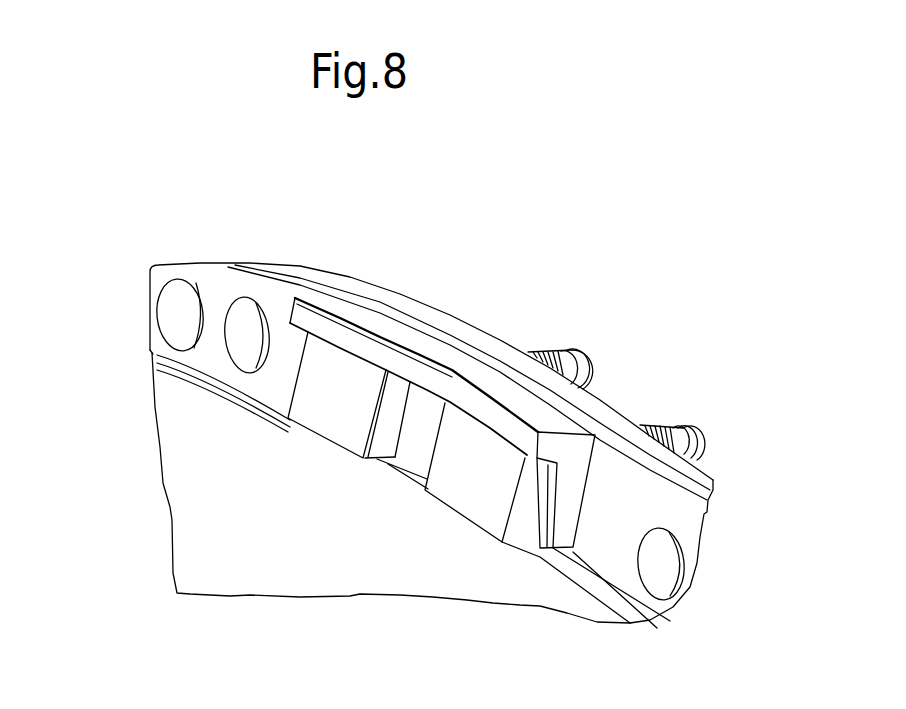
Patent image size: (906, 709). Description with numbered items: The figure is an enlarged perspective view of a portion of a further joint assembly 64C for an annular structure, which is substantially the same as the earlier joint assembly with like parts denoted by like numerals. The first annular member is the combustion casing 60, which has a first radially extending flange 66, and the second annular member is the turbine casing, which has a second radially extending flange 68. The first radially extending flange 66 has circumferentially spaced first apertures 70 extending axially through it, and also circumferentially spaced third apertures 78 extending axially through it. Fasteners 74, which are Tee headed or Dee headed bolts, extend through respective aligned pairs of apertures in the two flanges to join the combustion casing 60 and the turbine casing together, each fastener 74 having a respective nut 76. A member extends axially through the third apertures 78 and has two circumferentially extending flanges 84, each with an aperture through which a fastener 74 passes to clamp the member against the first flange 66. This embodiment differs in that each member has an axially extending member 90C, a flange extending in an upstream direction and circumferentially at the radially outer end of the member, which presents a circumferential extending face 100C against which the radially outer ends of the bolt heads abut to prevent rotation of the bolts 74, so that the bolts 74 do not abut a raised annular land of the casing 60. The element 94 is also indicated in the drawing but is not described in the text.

The joint assembly 64C is at (612, 228).
The combustion casing 60 is at (198, 437).
The first radially extending flange 66 is at (262, 273).
The second radially extending flange 68 is at (700, 480).
The first apertures 70 is at (240, 348).
The fasteners 74 is at (352, 433).
The nut 76 is at (580, 352).
The third apertures 78 is at (175, 316).
The circumferentially extending flange 84 is at (570, 493).
The axially extending member 90C is at (398, 338).
The top flange 94 is at (283, 262).
The circumferential extending face 100C is at (420, 397).